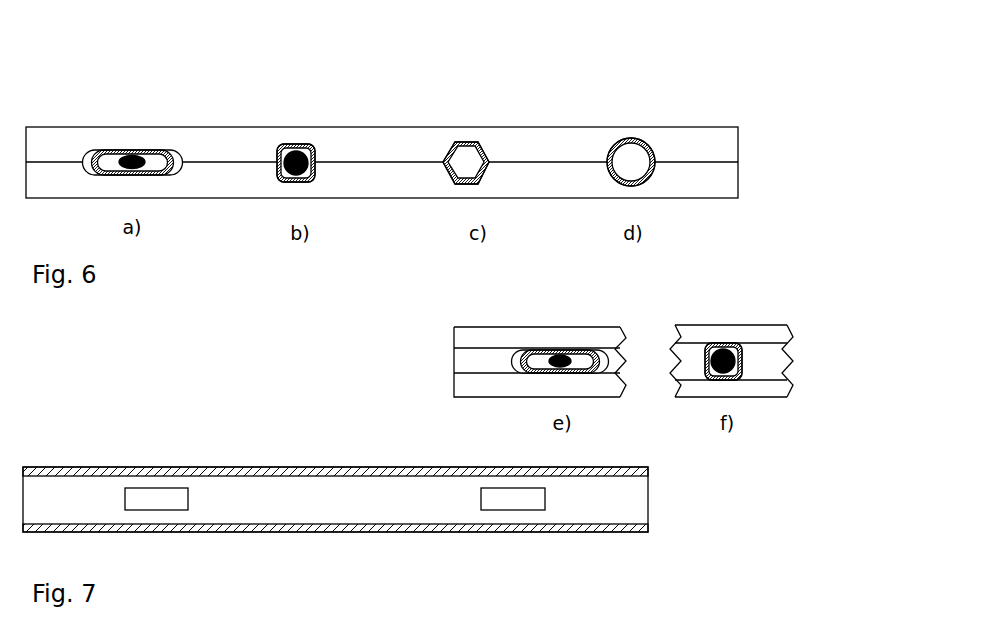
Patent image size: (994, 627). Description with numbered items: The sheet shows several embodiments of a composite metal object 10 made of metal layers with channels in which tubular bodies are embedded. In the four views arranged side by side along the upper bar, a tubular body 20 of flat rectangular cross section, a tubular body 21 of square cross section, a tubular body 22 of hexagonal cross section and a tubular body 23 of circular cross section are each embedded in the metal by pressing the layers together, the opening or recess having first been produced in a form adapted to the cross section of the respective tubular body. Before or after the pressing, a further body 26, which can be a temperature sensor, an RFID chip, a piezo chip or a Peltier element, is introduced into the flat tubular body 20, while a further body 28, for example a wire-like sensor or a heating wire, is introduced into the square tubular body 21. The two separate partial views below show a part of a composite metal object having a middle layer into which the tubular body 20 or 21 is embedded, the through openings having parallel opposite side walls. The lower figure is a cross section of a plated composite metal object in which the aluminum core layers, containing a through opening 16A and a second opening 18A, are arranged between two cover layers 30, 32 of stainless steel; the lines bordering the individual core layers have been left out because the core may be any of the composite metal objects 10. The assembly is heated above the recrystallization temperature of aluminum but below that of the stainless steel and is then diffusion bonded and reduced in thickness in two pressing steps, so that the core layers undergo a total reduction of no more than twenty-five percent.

In FIG. 6, the composite metal object 10 is at (478, 305).
In FIG. 7, the composite metal object 10 is at (327, 445).
In FIG. 6, the tubular body with flat rectangular cross section 20 is at (107, 150).
In FIG. 6, the further body 26 is at (133, 154).
In FIG. 6, the tubular body with square cross section 21 is at (287, 147).
In FIG. 6, the further body 28 is at (303, 153).
In FIG. 6, the tubular body with hexagonal cross section 22 is at (467, 142).
In FIG. 6, the tubular body with circular cross section 23 is at (636, 142).
In FIG. 7, the cover layer 30 is at (188, 467).
In FIG. 7, the cover layer 32 is at (376, 531).
In FIG. 7, the through opening 16A is at (151, 500).
In FIG. 7, the second window opening 18A is at (515, 500).